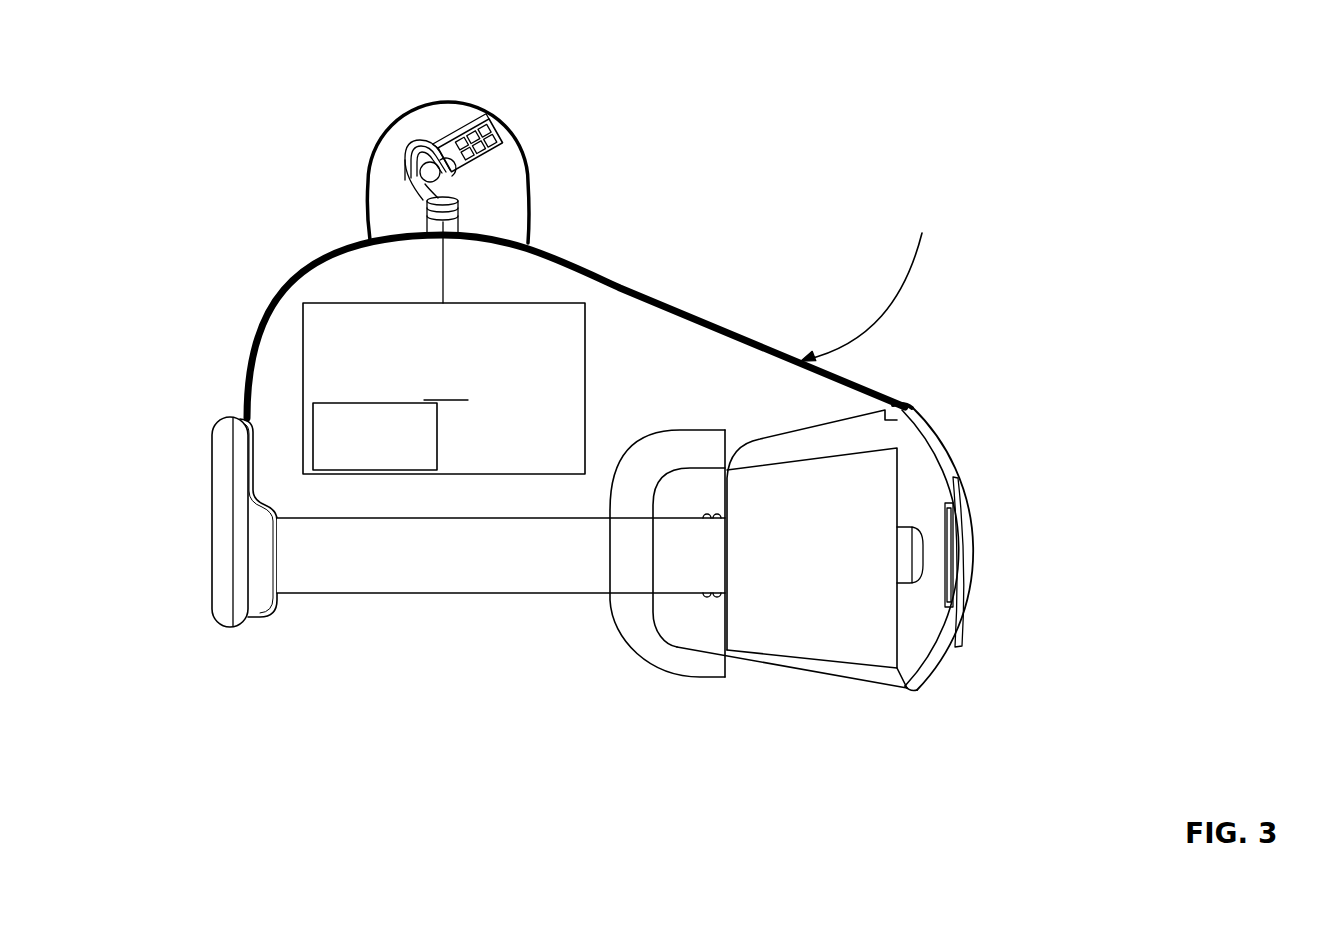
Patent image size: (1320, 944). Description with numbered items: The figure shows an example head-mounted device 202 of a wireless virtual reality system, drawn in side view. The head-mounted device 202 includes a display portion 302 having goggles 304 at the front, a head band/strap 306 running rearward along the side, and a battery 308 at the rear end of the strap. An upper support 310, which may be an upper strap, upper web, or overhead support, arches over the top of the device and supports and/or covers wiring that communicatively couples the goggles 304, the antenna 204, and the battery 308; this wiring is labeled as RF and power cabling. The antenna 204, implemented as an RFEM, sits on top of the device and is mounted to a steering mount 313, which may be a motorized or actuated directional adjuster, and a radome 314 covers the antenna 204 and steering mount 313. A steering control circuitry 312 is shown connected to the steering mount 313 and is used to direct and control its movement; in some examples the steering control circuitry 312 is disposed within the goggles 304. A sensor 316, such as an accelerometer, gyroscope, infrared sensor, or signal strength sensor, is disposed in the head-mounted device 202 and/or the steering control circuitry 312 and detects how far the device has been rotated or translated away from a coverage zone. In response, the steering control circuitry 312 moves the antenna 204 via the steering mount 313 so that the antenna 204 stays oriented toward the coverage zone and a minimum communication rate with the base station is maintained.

The head-mounted device 202 is at (827, 88).
The antenna 204 is at (468, 128).
The display portion 302 is at (933, 435).
The goggles 304 is at (907, 673).
The head band/strap 306 is at (413, 518).
The battery 308 is at (220, 420).
The upper support 310 is at (282, 307).
The steering control circuitry 312 is at (400, 152).
The steering mount 313 is at (425, 103).
The radome 314 is at (530, 182).
The sensor 316 is at (353, 463).